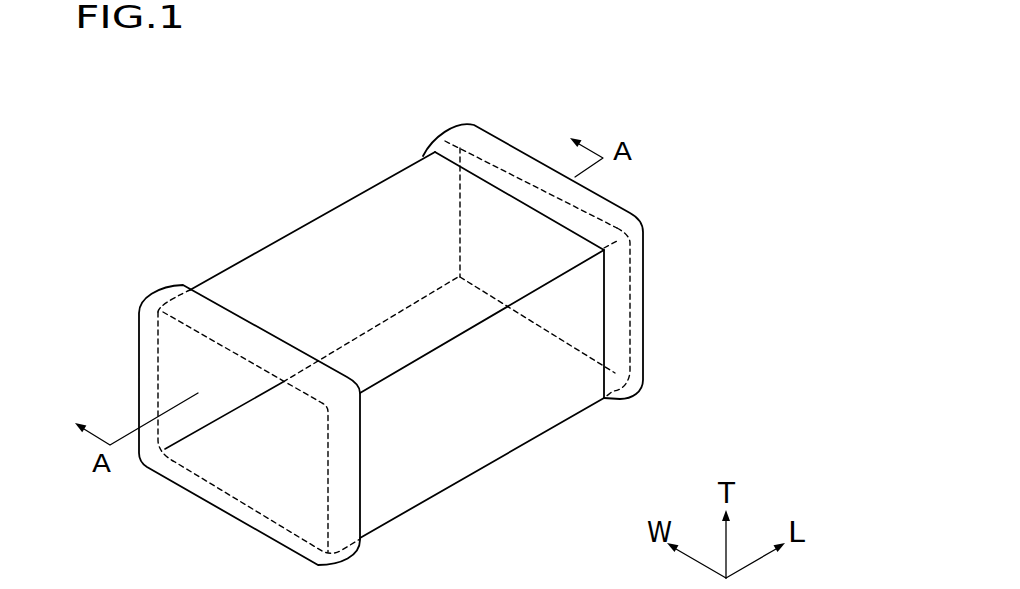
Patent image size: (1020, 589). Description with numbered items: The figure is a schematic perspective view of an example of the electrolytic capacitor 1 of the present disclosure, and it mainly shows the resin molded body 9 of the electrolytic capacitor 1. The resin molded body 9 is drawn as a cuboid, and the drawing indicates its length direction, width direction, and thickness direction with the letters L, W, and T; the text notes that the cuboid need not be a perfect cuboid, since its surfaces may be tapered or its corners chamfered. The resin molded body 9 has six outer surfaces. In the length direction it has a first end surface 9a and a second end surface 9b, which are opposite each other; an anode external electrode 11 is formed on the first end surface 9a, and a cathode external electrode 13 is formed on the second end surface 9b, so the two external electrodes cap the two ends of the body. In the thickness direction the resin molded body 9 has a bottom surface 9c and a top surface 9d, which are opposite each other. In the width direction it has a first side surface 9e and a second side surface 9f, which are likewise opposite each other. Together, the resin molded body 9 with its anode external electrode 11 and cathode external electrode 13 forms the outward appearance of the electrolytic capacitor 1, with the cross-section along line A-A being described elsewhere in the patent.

The electrolytic capacitor 1 is at (123, 153).
The resin molded body 9 is at (420, 188).
The first end surface 9a is at (242, 470).
The second end surface 9b is at (590, 288).
The bottom surface 9c is at (435, 472).
The top surface 9d is at (363, 215).
The first side surface 9e is at (507, 427).
The second side surface 9f is at (277, 277).
The anode external electrode 11 is at (147, 342).
The cathode external electrode 13 is at (608, 212).